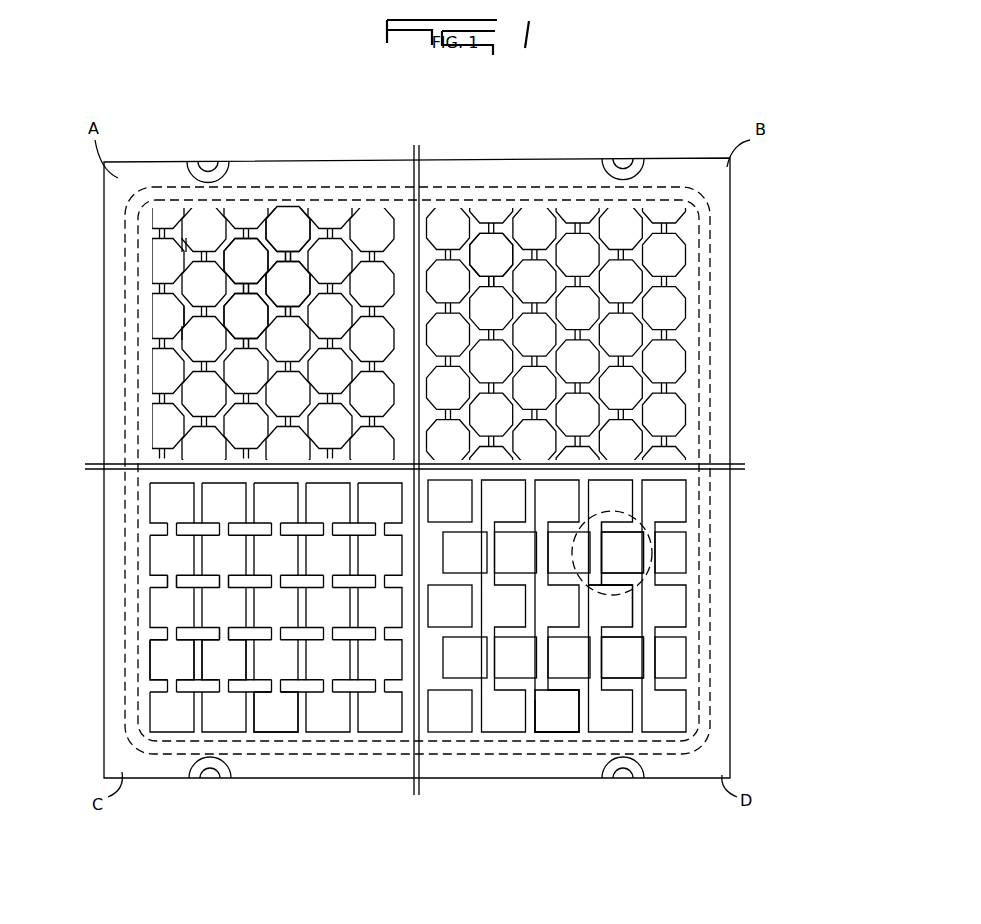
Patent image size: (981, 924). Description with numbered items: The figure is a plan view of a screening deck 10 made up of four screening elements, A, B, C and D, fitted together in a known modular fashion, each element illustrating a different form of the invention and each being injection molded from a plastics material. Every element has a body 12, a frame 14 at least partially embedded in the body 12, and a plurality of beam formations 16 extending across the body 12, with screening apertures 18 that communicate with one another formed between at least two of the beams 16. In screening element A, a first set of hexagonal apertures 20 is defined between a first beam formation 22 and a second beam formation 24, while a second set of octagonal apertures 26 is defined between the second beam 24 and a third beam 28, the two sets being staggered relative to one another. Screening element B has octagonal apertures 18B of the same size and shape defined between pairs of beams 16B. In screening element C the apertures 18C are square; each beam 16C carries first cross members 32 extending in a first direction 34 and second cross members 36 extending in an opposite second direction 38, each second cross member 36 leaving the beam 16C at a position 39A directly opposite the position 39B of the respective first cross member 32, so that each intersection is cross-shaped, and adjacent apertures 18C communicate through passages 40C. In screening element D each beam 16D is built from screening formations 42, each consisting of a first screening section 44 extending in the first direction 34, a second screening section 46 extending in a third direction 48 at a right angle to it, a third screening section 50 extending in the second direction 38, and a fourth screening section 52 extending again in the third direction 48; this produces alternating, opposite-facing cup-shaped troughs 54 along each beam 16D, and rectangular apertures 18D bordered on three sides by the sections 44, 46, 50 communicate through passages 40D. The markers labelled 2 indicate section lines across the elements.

The screening deck 10 is at (120, 68).
The body 12 is at (132, 173).
The frame 14 is at (200, 227).
The beam formations 16 is at (287, 238).
The screening apertures 18 is at (287, 277).
The first set of apertures 20 is at (241, 180).
The first beam formation 22 is at (188, 243).
The second beam formation 24 is at (240, 257).
The second set of apertures 26 is at (187, 318).
The third beam 28 is at (253, 312).
The beams 16B is at (512, 240).
The octagonal shaped apertures 18B is at (478, 256).
The beams 16C is at (240, 718).
The apertures 18C is at (259, 712).
The beams 16D is at (525, 707).
The rectangular apertures 18D is at (540, 700).
The first cross members 32 is at (187, 637).
The first direction 34 is at (117, 848).
The second cross members 36 is at (213, 633).
The second direction 38 is at (312, 848).
The position 39A is at (187, 575).
The position 39B is at (211, 575).
The passages 40C is at (218, 646).
The passages 40D is at (560, 703).
The screening formations 42 is at (658, 521).
The first screening section 44 is at (600, 557).
The second screening section 46 is at (615, 578).
The third direction 48 is at (590, 795).
The third screening section 50 is at (617, 587).
The fourth screening section 52 is at (628, 595).
The cup-shaped troughs 54 is at (625, 653).
The section line 2 is at (291, 336).